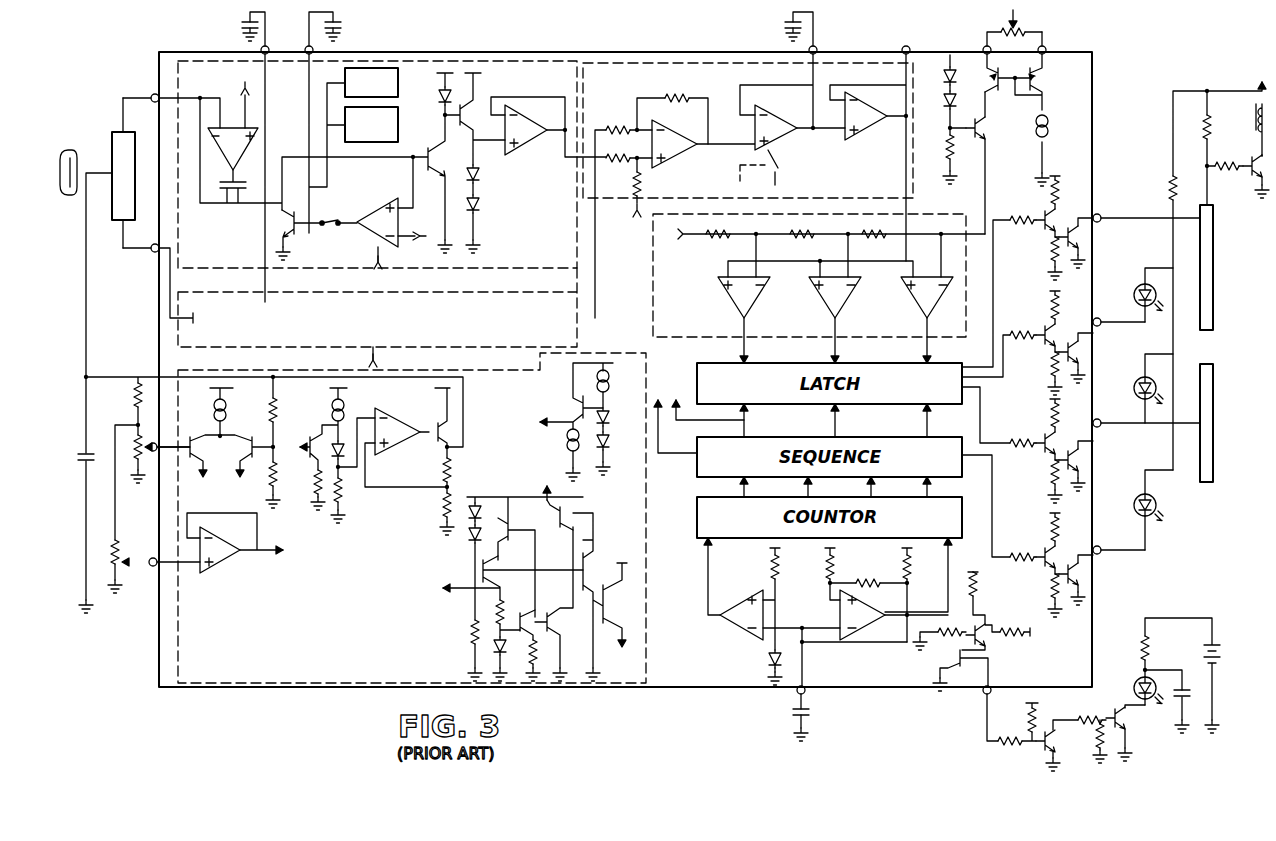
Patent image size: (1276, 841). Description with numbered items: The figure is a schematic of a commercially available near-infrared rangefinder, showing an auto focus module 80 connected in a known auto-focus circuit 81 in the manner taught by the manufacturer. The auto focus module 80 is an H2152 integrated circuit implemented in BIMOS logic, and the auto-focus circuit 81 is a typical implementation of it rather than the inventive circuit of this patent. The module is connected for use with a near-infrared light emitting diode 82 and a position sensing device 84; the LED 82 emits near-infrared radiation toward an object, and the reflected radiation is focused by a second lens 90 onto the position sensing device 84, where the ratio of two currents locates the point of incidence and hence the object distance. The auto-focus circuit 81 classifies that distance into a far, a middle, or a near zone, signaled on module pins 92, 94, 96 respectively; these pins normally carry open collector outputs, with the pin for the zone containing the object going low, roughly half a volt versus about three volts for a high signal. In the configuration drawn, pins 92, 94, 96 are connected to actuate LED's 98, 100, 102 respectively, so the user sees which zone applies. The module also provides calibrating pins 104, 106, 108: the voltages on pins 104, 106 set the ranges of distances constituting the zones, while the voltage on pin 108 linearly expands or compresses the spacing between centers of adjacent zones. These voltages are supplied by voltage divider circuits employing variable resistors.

The auto focus module 80 is at (160, 659).
The auto-focus circuit 81 is at (147, 41).
The near-infrared light emitting diode 82 is at (1133, 683).
The position sensing device 84 is at (118, 132).
The second lens 90 is at (80, 152).
The pin 92 is at (1099, 546).
The pin 94 is at (1099, 419).
The pin 96 is at (1099, 318).
The LED 98 is at (1160, 507).
The LED 100 is at (1144, 377).
The LED 102 is at (1144, 283).
The pin 104 is at (1044, 47).
The pin 106 is at (985, 47).
The pin 108 is at (152, 566).